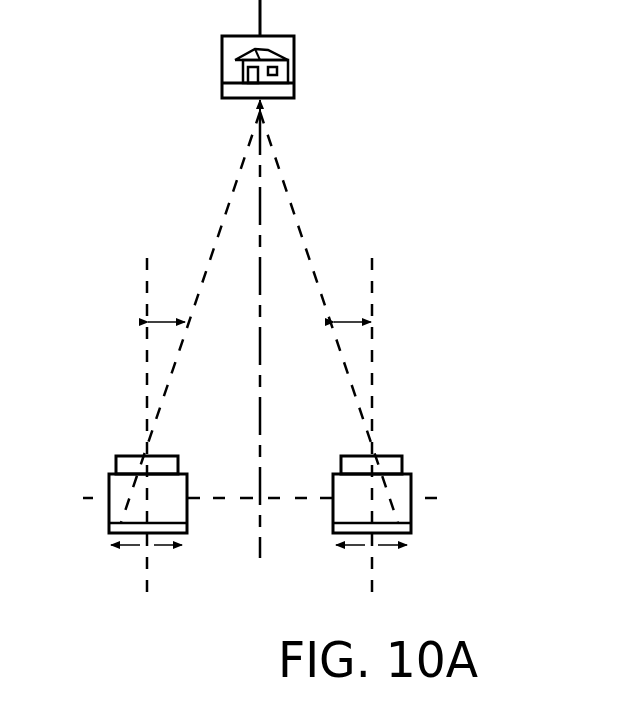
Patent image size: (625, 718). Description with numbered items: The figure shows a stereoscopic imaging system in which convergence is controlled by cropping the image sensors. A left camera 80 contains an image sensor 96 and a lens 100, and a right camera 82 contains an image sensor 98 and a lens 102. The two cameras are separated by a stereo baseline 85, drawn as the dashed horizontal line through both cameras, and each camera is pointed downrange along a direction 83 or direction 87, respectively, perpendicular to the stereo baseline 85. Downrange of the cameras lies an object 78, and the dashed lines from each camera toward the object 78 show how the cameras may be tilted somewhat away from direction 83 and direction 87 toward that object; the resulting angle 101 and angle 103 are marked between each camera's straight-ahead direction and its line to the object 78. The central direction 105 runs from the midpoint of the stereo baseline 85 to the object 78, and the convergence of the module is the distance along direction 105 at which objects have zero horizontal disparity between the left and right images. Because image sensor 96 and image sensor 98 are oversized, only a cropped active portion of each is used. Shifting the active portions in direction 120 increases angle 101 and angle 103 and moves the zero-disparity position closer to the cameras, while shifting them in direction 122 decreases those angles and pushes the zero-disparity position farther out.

The object 78 is at (276, 36).
The left camera 80 is at (187, 510).
The right camera 82 is at (333, 510).
The direction 83 is at (147, 348).
The stereo baseline 85 is at (214, 497).
The direction 87 is at (372, 348).
The image sensor 96 is at (116, 528).
The image sensor 98 is at (402, 528).
The lens 100 is at (122, 466).
The angle 101 is at (165, 318).
The lens 102 is at (395, 466).
The angle 103 is at (355, 318).
The direction 105 is at (262, 462).
The direction 120 is at (130, 549).
The direction 122 is at (163, 549).